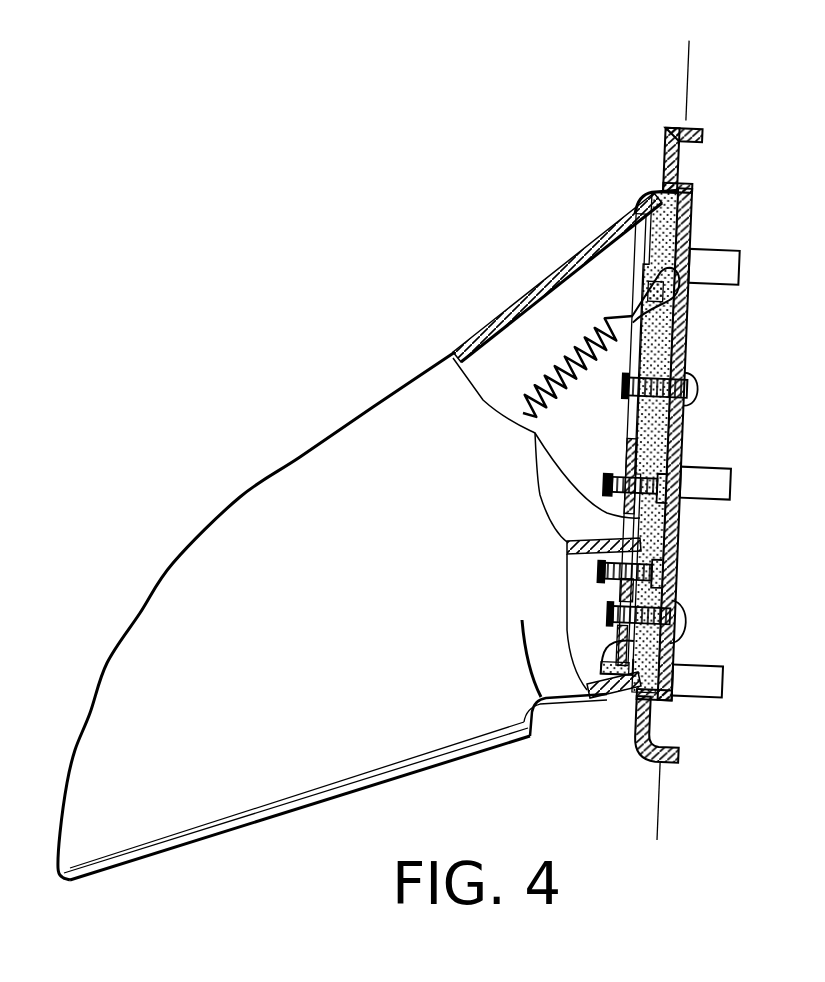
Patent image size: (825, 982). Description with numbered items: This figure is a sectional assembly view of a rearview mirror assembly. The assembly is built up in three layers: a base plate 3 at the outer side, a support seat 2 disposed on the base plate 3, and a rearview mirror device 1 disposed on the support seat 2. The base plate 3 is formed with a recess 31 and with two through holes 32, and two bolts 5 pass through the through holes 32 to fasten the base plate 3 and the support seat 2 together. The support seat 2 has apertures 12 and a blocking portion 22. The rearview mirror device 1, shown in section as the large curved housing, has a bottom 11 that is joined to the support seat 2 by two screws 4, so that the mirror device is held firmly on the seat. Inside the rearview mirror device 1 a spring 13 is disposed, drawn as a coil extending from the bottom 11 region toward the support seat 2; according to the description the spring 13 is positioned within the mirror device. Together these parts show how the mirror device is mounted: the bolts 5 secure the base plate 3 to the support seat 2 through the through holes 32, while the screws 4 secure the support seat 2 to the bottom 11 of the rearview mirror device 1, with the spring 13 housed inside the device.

The rearview mirror device 1 is at (480, 400).
The bottom 11 is at (656, 199).
The apertures 12 is at (668, 248).
The spring 13 is at (650, 335).
The support seat 2 is at (690, 180).
The blocking portion 22 is at (678, 642).
The base plate 3 is at (660, 745).
The recess 31 is at (688, 215).
The through holes 32 is at (675, 370).
The screws 4 is at (688, 568).
The bolts 5 is at (690, 392).